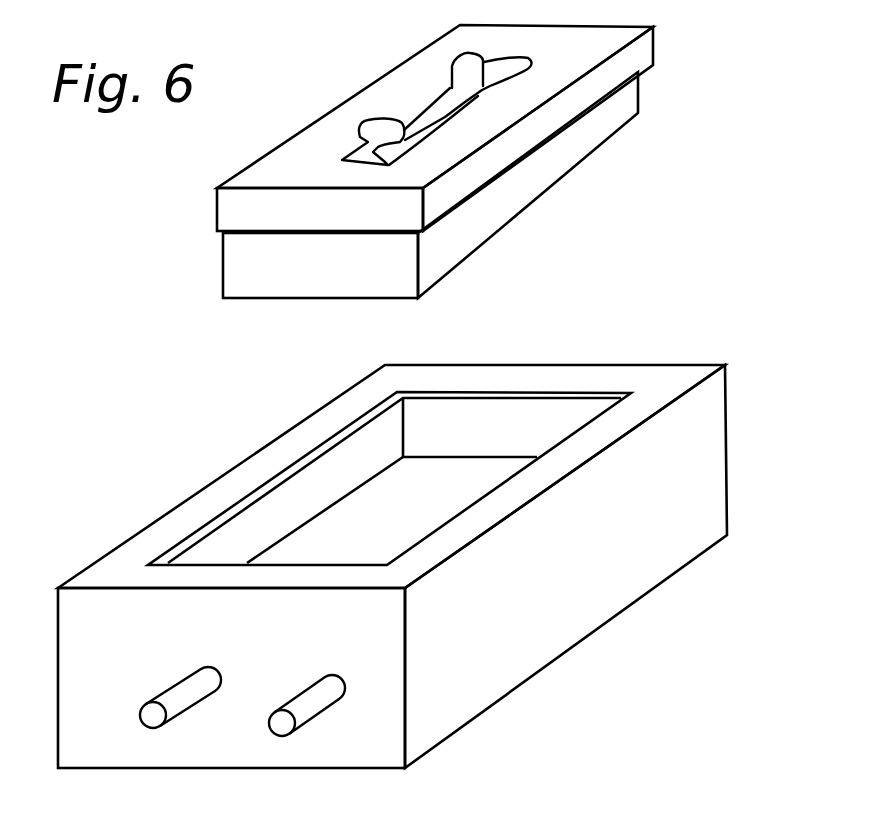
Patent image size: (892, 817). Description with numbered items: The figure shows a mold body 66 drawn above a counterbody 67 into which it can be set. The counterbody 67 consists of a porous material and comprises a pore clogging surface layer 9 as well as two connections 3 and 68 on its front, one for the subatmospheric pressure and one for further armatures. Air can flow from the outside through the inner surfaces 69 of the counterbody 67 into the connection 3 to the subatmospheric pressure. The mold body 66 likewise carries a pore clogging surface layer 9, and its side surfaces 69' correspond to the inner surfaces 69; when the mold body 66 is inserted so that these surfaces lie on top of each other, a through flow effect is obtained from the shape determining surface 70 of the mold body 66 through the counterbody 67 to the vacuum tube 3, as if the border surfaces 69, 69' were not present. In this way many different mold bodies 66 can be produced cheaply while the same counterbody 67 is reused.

The connection for the subatmospheric pressure 3 is at (147, 713).
The pore clogging surface layer 9 is at (277, 167).
The mold body 66 is at (423, 162).
The counterbody 67 is at (394, 566).
The connection for further armatures 68 is at (283, 723).
The inner surfaces 69 is at (389, 478).
The corresponding surfaces of the mold body 69' is at (366, 185).
The shape determining surface 70 is at (433, 110).